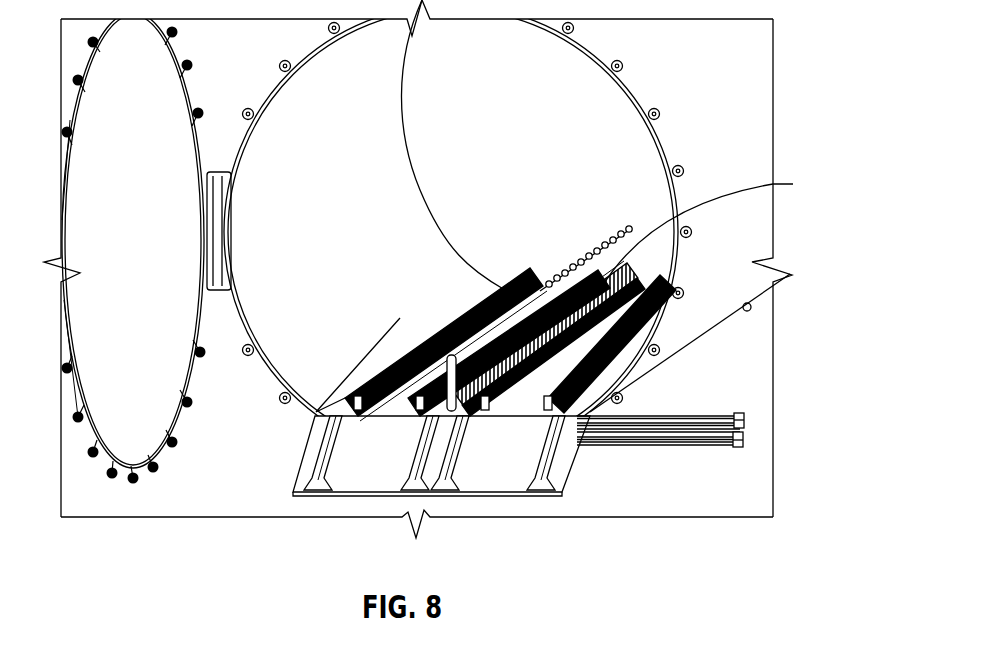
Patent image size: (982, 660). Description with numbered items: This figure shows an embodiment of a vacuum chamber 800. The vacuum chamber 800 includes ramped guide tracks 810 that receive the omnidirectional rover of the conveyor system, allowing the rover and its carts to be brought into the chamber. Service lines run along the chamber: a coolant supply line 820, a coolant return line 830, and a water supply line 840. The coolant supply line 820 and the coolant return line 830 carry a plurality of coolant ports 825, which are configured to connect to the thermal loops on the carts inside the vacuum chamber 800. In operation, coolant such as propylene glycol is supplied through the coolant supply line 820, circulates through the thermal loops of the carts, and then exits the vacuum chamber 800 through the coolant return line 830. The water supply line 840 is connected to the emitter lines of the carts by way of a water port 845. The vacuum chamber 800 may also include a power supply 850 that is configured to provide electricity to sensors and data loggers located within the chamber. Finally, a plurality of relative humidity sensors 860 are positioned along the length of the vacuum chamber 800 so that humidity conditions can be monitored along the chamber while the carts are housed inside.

The vacuum chamber 800 is at (773, 122).
The ramped guide tracks 810 is at (313, 494).
The coolant supply line 820 is at (743, 420).
The coolant ports 825 is at (400, 318).
The coolant return line 830 is at (745, 428).
The water supply line 840 is at (743, 436).
The water port 845 is at (713, 289).
The power supply 850 is at (743, 443).
The relative humidity sensors 860 is at (637, 191).